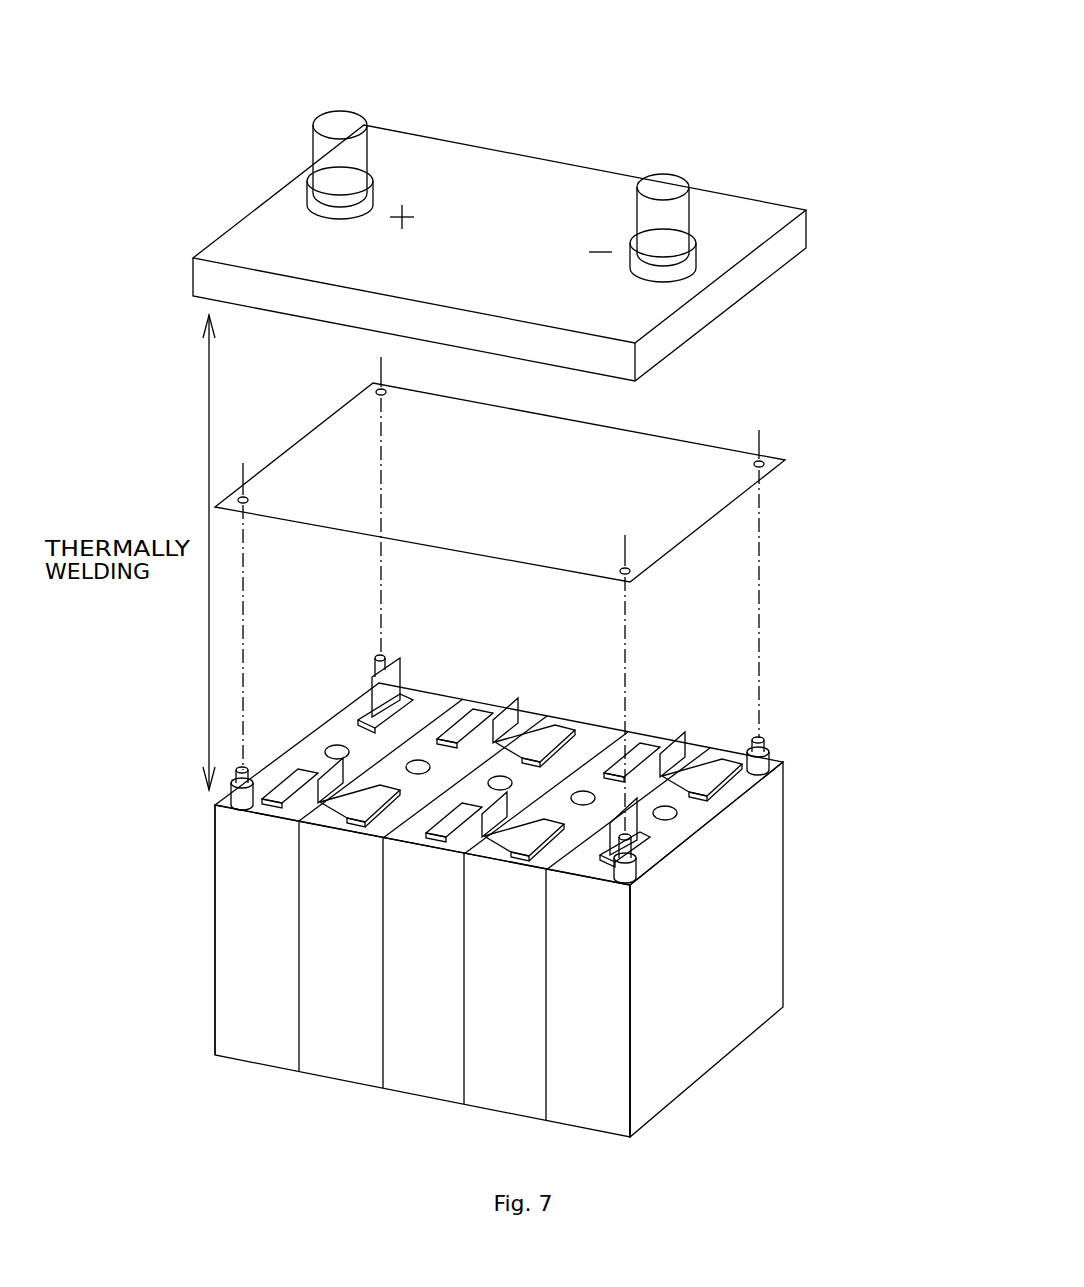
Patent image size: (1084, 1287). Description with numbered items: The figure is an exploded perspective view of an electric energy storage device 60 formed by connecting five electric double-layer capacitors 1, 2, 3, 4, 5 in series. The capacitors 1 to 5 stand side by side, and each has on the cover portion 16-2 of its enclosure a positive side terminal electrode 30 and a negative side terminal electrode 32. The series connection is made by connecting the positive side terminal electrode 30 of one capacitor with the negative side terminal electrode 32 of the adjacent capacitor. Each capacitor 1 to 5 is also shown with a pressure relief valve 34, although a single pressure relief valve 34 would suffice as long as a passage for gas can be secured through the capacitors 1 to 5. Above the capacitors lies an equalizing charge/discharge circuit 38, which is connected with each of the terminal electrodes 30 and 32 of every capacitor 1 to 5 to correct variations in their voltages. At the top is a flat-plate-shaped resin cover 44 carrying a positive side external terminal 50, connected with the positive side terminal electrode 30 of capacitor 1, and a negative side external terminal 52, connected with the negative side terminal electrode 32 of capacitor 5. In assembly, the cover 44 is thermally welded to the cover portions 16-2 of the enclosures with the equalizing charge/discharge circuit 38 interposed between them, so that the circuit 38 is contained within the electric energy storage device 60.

The electric double-layer capacitor 1 is at (252, 1050).
The electric double-layer capacitor 2 is at (347, 1068).
The electric double-layer capacitor 3 is at (425, 1078).
The electric double-layer capacitor 4 is at (500, 1088).
The electric double-layer capacitor 5 is at (585, 1098).
The cover portion 16-2 is at (328, 733).
The positive side terminal electrode 30 is at (393, 682).
The negative side terminal electrode 32 is at (477, 728).
The pressure relief valve 34 is at (676, 813).
The equalizing charge/discharge circuit 38 is at (643, 512).
The cover 44 is at (717, 248).
The positive side external terminal 50 is at (343, 120).
The negative side external terminal 52 is at (662, 180).
The electric energy storage device 60 is at (860, 582).